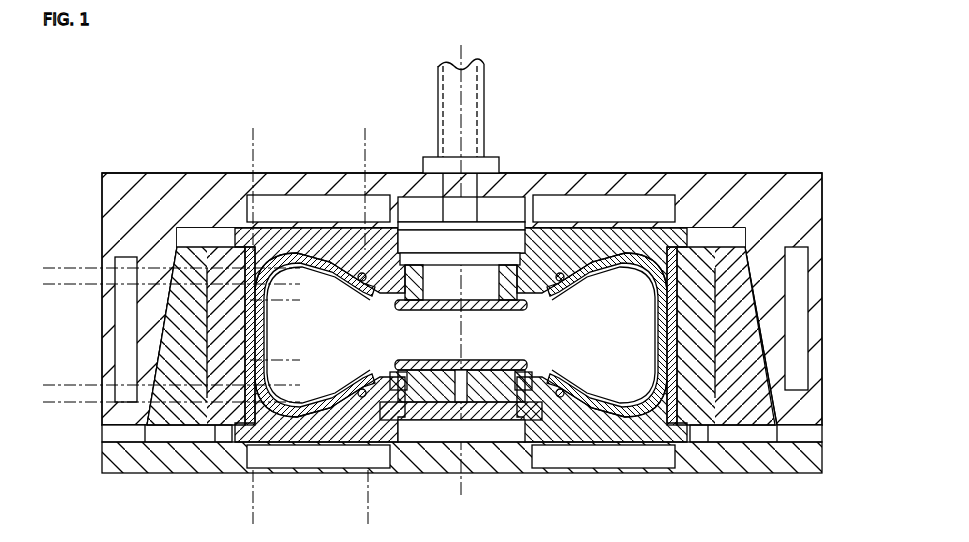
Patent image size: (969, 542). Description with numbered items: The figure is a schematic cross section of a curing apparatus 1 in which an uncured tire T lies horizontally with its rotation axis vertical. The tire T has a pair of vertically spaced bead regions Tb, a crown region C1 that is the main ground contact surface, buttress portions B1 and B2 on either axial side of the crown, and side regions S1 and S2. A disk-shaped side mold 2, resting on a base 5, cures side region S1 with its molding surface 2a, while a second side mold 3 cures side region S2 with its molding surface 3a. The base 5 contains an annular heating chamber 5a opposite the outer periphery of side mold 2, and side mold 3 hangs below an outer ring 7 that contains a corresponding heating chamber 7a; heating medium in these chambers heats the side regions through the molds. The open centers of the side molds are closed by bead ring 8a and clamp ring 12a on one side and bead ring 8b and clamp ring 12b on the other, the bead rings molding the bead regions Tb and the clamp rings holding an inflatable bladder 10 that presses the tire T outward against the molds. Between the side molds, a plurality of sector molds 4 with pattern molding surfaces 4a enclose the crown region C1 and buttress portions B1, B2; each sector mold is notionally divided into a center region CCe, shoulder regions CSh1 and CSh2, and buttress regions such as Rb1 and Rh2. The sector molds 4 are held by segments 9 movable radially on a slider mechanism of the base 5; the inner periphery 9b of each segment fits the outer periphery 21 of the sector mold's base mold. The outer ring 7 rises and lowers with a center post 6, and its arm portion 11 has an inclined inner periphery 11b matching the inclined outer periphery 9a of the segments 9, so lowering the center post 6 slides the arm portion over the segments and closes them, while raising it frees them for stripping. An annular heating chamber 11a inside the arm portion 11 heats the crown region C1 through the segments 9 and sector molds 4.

The curing apparatus 1 is at (380, 101).
The side mold 2 is at (305, 433).
The molding surface 2a is at (320, 406).
The side mold 3 is at (300, 248).
The molding surface 3a is at (336, 274).
The sector mold 4 is at (208, 262).
The pattern molding surface 4a is at (262, 350).
The base 5 is at (435, 462).
The heating chamber 5a is at (275, 455).
The center post 6 is at (470, 120).
The outer ring 7 is at (553, 186).
The heating chamber 7a is at (335, 210).
The bead ring 8a is at (398, 380).
The bead ring 8b is at (410, 292).
The segment 9 is at (165, 258).
The outer periphery 9a is at (135, 272).
The inner periphery 9b is at (212, 440).
The bladder 10 is at (645, 298).
The arm portion 11 is at (125, 345).
The heating chamber 11a is at (128, 368).
The inner periphery 11b is at (130, 405).
The clamp ring 12a is at (436, 366).
The clamp ring 12b is at (510, 312).
The outer periphery 21 is at (158, 432).
The tire T is at (622, 245).
The bead region Tb is at (361, 283).
The side region S1 is at (368, 517).
The side region S2 is at (365, 137).
The buttress portion B1 is at (43, 385).
The buttress portion B2 is at (43, 268).
The crown region C1 is at (43, 284).
The upper rim height Rh2 is at (294, 268).
The shoulder region CSh2 is at (294, 284).
The center region CCe is at (294, 300).
The shoulder region CSh1 is at (294, 360).
The buttress region Rb1 is at (294, 385).